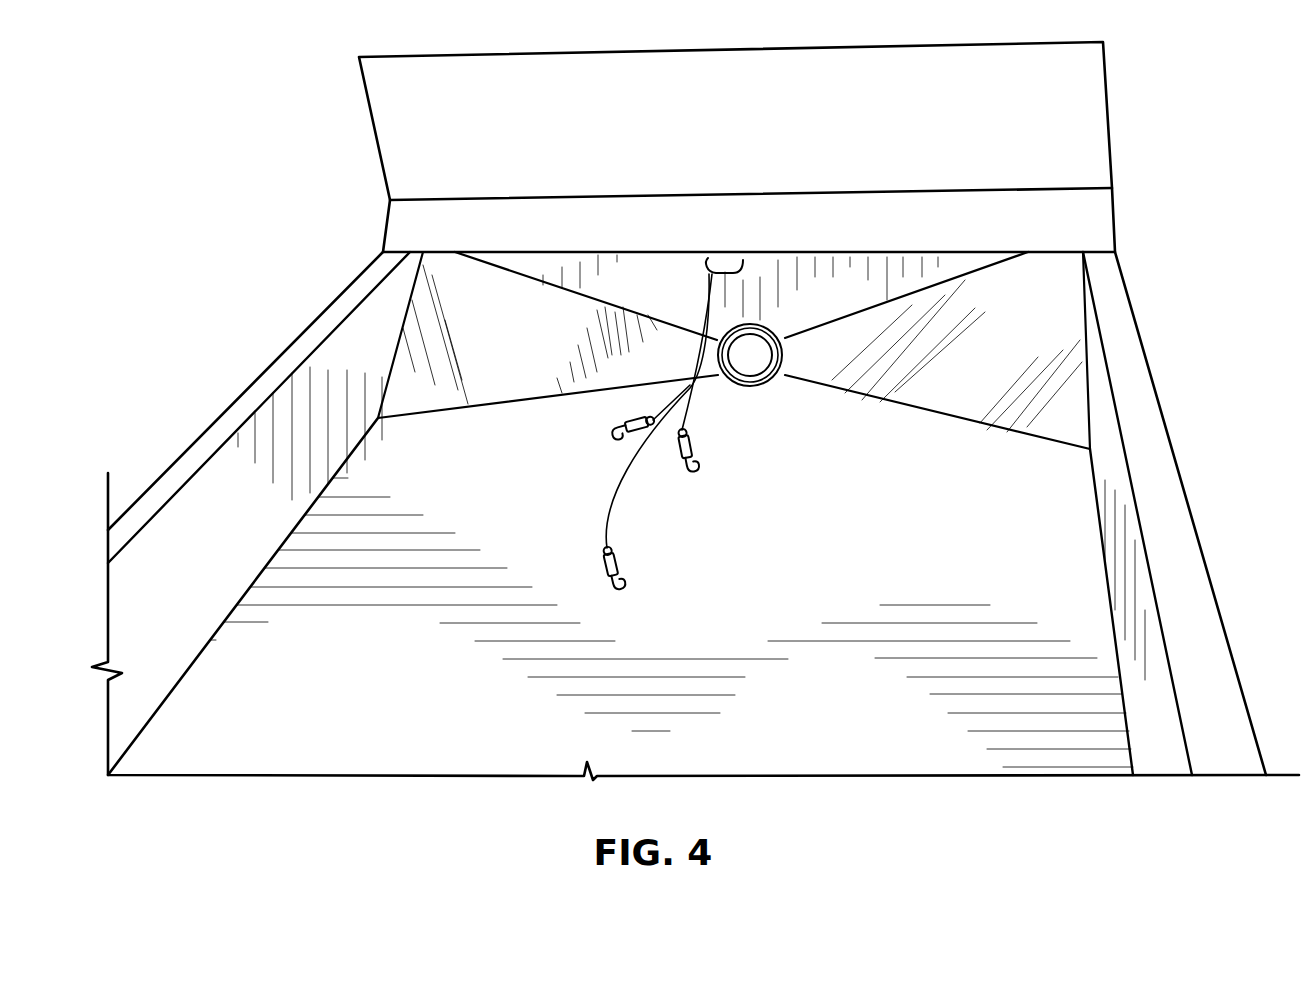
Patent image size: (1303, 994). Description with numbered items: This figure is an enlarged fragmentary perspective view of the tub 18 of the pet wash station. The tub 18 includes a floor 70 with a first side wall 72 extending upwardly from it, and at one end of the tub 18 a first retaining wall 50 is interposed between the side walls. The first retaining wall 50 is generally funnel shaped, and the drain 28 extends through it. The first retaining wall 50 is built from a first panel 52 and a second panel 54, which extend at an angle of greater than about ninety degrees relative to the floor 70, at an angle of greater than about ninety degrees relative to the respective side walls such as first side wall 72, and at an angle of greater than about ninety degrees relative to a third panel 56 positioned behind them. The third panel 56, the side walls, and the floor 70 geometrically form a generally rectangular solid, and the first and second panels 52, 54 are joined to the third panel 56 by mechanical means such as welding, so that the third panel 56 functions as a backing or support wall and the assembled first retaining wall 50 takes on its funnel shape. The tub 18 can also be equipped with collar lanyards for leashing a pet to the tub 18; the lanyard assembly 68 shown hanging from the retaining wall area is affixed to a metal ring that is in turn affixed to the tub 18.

The tub 18 is at (302, 353).
The drain 28 is at (764, 326).
The first retaining wall 50 is at (829, 288).
The first panel 52 is at (487, 358).
The second panel 54 is at (985, 366).
The third panel 56 is at (670, 298).
The strap and hook assembly 68 is at (718, 531).
The floor 70 is at (397, 698).
The first side wall 72 is at (203, 538).